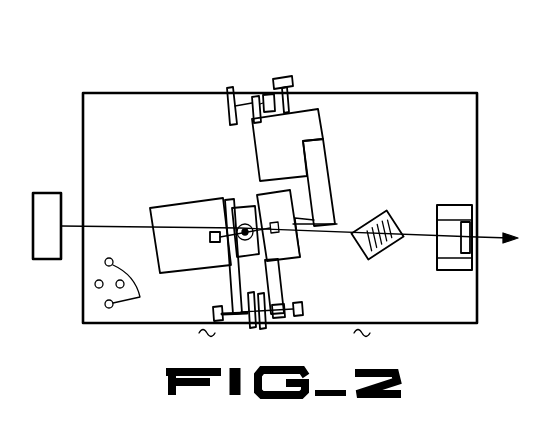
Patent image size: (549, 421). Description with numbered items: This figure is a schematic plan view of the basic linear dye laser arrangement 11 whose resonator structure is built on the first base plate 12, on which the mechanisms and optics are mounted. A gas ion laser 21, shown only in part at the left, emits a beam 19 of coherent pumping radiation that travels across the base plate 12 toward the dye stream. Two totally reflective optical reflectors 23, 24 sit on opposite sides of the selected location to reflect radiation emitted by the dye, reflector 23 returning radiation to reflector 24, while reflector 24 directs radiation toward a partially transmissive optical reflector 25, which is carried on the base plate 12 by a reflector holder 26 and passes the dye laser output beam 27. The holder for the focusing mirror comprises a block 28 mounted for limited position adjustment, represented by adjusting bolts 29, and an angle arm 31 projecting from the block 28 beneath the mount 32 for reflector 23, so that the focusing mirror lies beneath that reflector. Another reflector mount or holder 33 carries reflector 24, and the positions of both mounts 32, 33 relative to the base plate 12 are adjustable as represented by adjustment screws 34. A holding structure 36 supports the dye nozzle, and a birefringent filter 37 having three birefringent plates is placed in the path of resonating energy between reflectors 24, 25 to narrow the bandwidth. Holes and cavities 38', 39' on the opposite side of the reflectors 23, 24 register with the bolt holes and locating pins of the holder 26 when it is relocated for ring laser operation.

The optical apparatus 11 is at (489, 84).
The first base plate 12 is at (162, 131).
The beam of coherent radiation 19 is at (113, 225).
The gas ion laser 21 is at (49, 198).
The optical reflector 23 is at (283, 229).
The optical reflector 24 is at (208, 237).
The optical reflector 25 is at (467, 227).
The reflector holder 26 is at (443, 252).
The dye laser output beam 27 is at (492, 242).
The block 28 is at (312, 122).
The adjusting bolts 29 is at (278, 84).
The angle arm 31 is at (325, 187).
The mount 32 is at (265, 200).
The reflector mount or holder 33 is at (177, 209).
The adjustment screws 34 is at (250, 325).
The holding structure 36 is at (244, 206).
The birefringent filter 37 is at (393, 221).
The holes and cavities 38' is at (140, 287).
The holes and cavities 39' is at (82, 298).